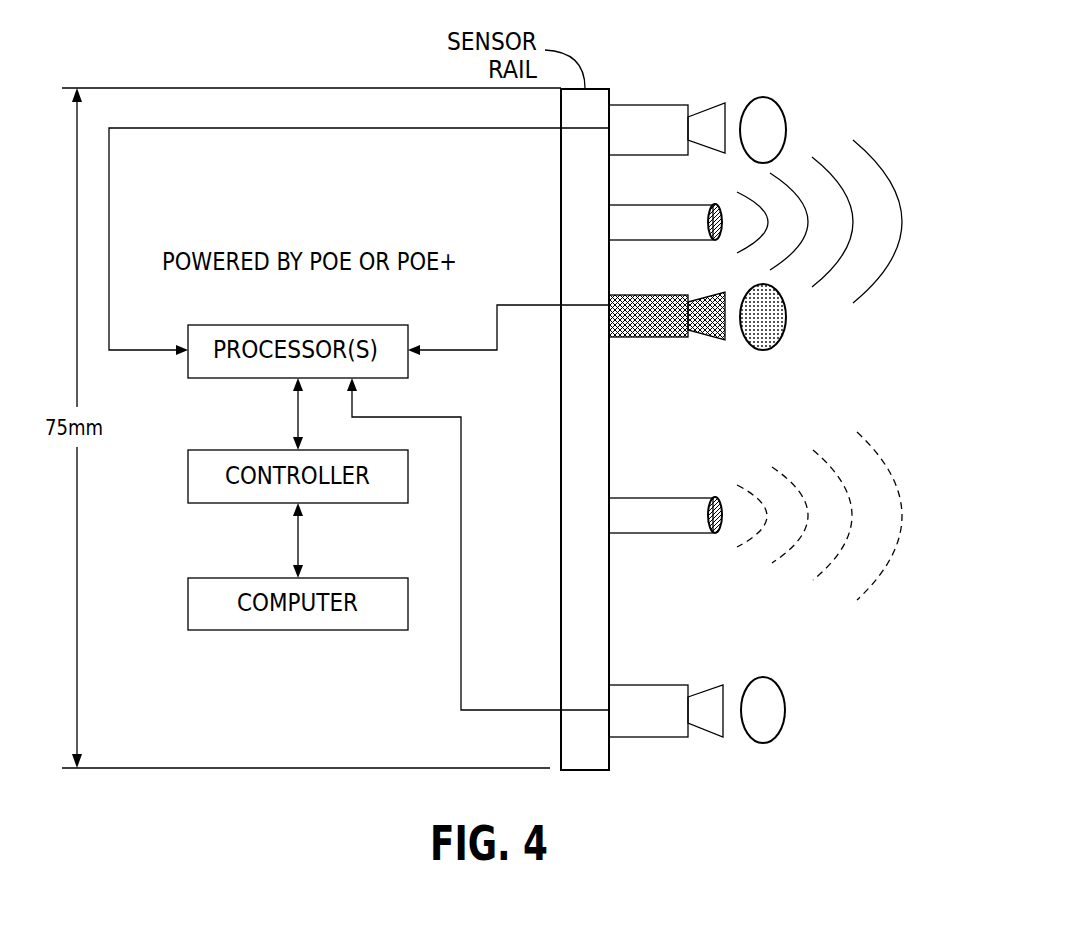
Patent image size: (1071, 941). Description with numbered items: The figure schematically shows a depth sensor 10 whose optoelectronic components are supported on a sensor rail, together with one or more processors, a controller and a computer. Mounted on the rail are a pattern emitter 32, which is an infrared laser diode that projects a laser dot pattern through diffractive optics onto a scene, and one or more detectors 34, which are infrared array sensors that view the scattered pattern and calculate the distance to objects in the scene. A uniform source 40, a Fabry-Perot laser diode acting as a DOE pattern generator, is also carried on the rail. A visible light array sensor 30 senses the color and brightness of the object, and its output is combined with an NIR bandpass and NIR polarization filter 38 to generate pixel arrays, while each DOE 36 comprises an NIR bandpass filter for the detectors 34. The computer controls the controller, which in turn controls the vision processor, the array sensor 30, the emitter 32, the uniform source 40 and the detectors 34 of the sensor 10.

The 3-D or depth sensor 10 is at (828, 50).
The visible light camera 30 is at (678, 338).
The pattern emitter 32 is at (680, 497).
The detector 34 is at (678, 104).
The diffractive optics element 36 is at (762, 96).
The NIR polarization filter 38 is at (765, 351).
The uniform source 40 is at (678, 204).